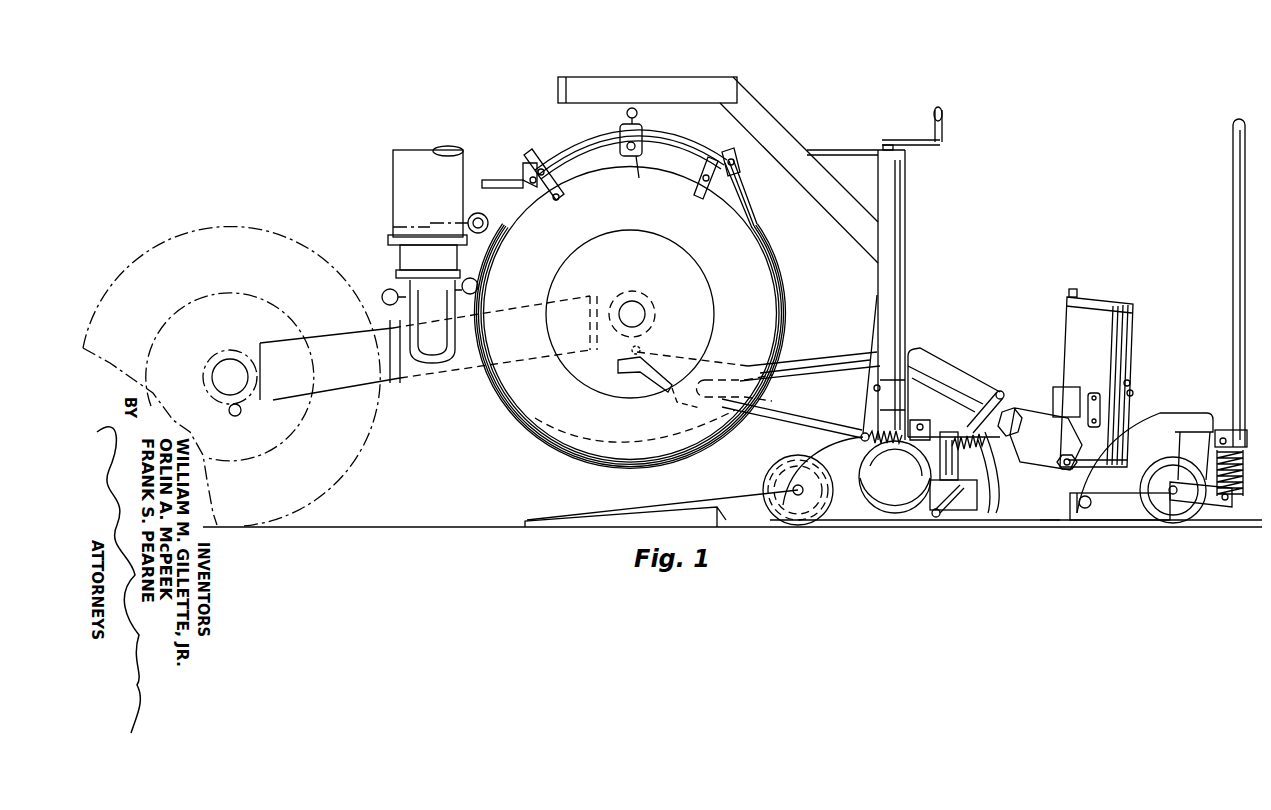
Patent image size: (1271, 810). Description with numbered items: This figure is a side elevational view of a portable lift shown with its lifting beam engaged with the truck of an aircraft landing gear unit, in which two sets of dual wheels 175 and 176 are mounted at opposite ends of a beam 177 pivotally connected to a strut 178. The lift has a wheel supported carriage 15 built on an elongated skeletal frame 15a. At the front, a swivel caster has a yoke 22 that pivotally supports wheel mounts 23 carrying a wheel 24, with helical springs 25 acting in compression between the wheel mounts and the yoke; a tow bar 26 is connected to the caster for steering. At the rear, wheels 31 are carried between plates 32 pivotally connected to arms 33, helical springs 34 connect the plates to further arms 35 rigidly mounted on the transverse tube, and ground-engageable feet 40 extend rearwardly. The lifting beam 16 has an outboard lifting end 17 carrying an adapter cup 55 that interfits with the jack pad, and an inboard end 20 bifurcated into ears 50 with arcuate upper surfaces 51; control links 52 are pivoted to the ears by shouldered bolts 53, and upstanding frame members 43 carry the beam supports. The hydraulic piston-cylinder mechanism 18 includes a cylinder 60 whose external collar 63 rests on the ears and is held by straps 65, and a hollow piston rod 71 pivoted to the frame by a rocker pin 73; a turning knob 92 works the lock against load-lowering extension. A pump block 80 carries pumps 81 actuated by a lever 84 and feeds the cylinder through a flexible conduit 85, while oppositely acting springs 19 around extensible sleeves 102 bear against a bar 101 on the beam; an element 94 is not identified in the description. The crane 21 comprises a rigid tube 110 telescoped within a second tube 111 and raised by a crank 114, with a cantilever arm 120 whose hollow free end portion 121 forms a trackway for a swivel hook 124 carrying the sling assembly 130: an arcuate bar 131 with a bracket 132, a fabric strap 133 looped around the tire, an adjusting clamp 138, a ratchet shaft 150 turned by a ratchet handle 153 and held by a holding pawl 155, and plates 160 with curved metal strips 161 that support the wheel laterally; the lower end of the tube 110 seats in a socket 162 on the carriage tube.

The free end portion 121 is at (672, 77).
The crane 21 is at (775, 93).
The sling assembly 130 is at (611, 126).
The swivel hook 124 is at (645, 112).
The arcuate bar 131 is at (690, 133).
The cantilever arm 120 is at (790, 127).
The crank 114 is at (948, 114).
The ratchet handle 153 is at (500, 178).
The holding pawl 155 is at (528, 168).
The plate 160 is at (560, 180).
The curved metal strip 161 is at (556, 199).
The bracket 132 is at (642, 160).
The adjusting clamp 138 is at (735, 166).
The fabric strap 133 is at (757, 207).
The shaft 150 is at (545, 192).
The strut 178 is at (393, 182).
The dual wheels 176 is at (283, 227).
The tow bar 26 is at (1233, 165).
The second rigid tube 111 is at (907, 207).
The turning knob 92 is at (1072, 288).
The hydraulic piston-cylinder mechanism 18 is at (1120, 300).
The hydraulic cylinder 60 is at (1128, 322).
The lifting beam 16 is at (832, 355).
The upstanding frame members 43 is at (870, 345).
The inboard end 20 is at (930, 362).
The bar 101 is at (998, 390).
The ears 50 is at (1055, 387).
The straps 65 is at (1093, 392).
The external collar 63 is at (1129, 381).
The arcuate upper surfaces 51 is at (1133, 392).
The wheel supported carriage 15 is at (1188, 410).
The flexible conduit 85 is at (1150, 423).
The yoke 22 is at (1200, 432).
The adapter cup 55 is at (645, 352).
The outboard lifting end 17 is at (797, 362).
The rigid tube 110 is at (874, 388).
The helical springs 34 is at (862, 422).
The arms 35 is at (918, 420).
The lever 84 is at (980, 407).
The beam 177 is at (473, 381).
The dual wheels 175 is at (553, 420).
The arms 33 is at (818, 448).
The plates 32 is at (796, 455).
The wheels 31 is at (767, 479).
The feet 40 is at (647, 514).
The pumps 81 is at (930, 467).
The socket 162 is at (895, 492).
The control links 52 is at (1037, 448).
The extensible sleeves 102 is at (947, 524).
The link 94 is at (965, 512).
The springs 19 is at (1000, 516).
The shouldered bolts 53 is at (1083, 509).
The rocker pin 73 is at (1098, 514).
The skeletal frame 15a is at (1058, 521).
The pump block 80 is at (952, 512).
The piston rod 71 is at (1128, 521).
The wheel 24 is at (1175, 512).
The wheel mounts 23 is at (1222, 500).
The helical springs 25 is at (1250, 500).